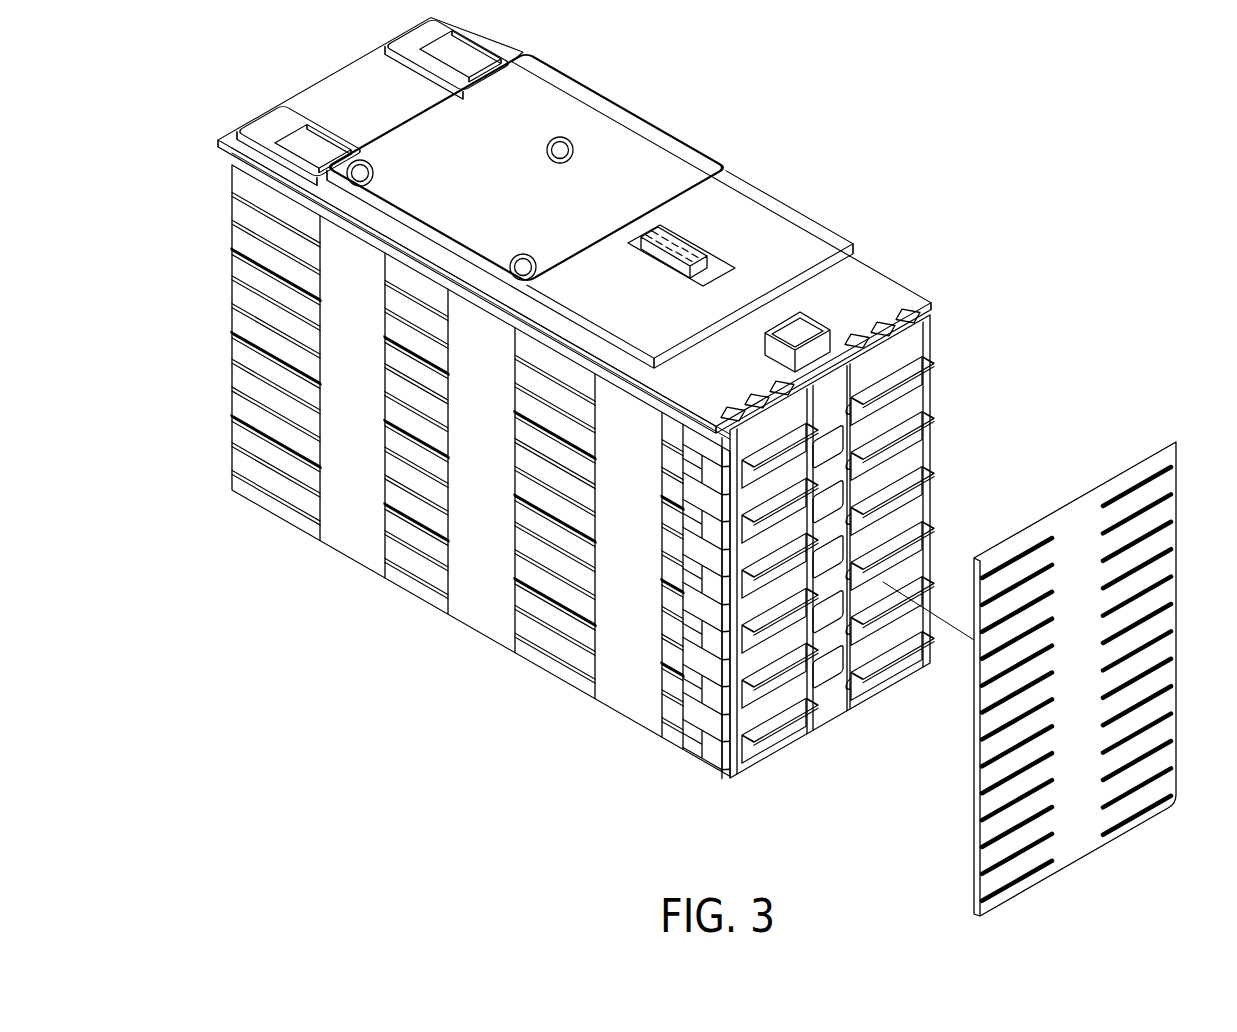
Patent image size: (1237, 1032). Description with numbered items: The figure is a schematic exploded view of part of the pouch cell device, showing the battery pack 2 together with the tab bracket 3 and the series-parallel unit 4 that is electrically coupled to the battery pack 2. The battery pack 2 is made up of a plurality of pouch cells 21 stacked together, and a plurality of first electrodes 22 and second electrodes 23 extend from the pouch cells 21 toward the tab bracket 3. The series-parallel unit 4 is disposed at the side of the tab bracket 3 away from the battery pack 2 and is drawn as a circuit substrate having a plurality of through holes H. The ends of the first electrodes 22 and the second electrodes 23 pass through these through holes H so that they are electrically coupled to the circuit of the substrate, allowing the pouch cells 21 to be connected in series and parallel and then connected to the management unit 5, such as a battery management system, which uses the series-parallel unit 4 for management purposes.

The battery pack 2 is at (224, 287).
The pouch cells 21 is at (243, 459).
The first electrodes 22 is at (768, 748).
The second electrodes 23 is at (885, 681).
The tab bracket 3 is at (712, 774).
The series-parallel unit 4 is at (1100, 855).
The management unit 5 is at (658, 128).
The through holes H is at (1009, 890).